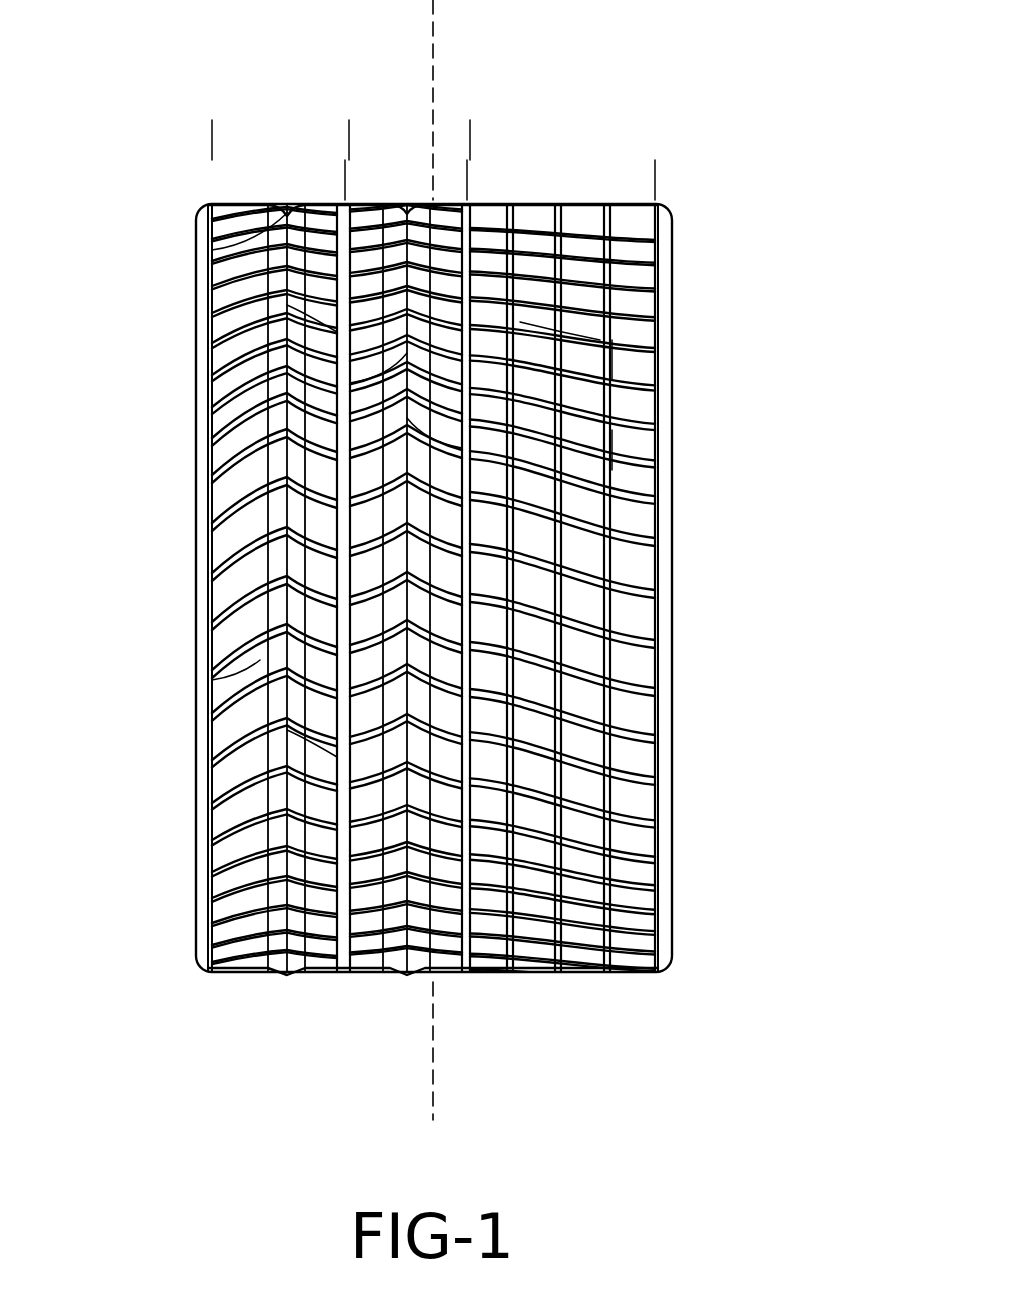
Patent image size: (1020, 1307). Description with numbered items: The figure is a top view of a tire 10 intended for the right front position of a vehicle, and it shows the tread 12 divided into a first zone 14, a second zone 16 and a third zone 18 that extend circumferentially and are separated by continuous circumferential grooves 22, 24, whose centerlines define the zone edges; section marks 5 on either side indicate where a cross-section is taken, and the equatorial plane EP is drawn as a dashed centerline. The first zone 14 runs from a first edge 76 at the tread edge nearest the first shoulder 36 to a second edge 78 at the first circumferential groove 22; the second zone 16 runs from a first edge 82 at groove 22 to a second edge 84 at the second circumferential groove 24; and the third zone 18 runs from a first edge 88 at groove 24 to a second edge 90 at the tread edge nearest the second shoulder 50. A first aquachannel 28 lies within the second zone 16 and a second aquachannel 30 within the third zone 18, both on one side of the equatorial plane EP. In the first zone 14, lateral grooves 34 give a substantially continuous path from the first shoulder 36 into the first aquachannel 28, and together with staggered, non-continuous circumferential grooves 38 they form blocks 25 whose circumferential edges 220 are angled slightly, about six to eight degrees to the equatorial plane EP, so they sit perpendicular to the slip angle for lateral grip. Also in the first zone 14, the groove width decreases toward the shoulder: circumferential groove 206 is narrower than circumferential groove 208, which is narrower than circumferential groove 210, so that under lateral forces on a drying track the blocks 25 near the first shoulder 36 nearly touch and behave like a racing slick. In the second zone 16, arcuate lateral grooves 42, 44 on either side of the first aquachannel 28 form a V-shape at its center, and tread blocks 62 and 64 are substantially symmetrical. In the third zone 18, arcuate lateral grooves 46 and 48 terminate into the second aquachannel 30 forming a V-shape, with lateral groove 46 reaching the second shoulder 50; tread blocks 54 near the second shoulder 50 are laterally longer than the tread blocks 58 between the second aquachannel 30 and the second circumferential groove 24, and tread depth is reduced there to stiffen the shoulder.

The tire 10 is at (701, 210).
The tread 12 is at (635, 757).
The first zone 14 is at (615, 583).
The second zone 16 is at (409, 586).
The third zone 18 is at (278, 549).
The first circumferential groove 22 is at (463, 977).
The second circumferential groove 24 is at (342, 975).
The blocks 25 is at (635, 357).
The first aquachannel 28 is at (405, 975).
The second aquachannel 30 is at (285, 968).
The lateral grooves 34 is at (628, 455).
The first shoulder 36 is at (660, 648).
The circumferential grooves 38 is at (555, 330).
The lateral groove 42 is at (372, 405).
The lateral groove 44 is at (422, 442).
The lateral groove 46 is at (243, 313).
The lateral groove 48 is at (300, 333).
The second shoulder 50 is at (200, 415).
The tread blocks 54 is at (232, 693).
The tread blocks 58 is at (320, 740).
The tread block 62 is at (365, 907).
The tread block 64 is at (447, 933).
The first edge of the first zone 76 is at (655, 178).
The second edge of the first zone 78 is at (470, 135).
The first edge of the second zone 82 is at (467, 178).
The second edge of the second zone 84 is at (349, 135).
The first edge of the third zone 88 is at (345, 178).
The second edge of the third zone 90 is at (212, 135).
The circumferential groove 206 is at (603, 975).
The circumferential groove 208 is at (557, 977).
The circumferential groove 210 is at (505, 977).
The circumferential edge 220 is at (508, 770).
The section line 5 is at (172, 587).
The equatorial plane EP is at (432, 579).